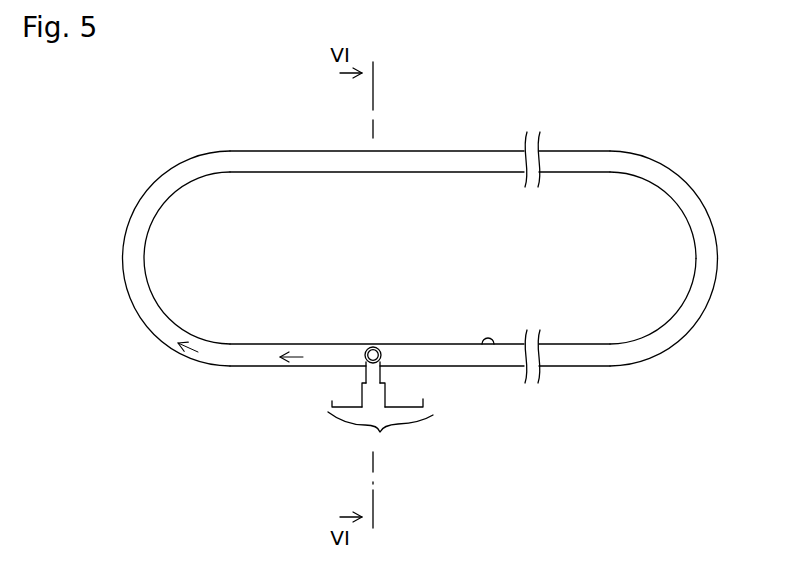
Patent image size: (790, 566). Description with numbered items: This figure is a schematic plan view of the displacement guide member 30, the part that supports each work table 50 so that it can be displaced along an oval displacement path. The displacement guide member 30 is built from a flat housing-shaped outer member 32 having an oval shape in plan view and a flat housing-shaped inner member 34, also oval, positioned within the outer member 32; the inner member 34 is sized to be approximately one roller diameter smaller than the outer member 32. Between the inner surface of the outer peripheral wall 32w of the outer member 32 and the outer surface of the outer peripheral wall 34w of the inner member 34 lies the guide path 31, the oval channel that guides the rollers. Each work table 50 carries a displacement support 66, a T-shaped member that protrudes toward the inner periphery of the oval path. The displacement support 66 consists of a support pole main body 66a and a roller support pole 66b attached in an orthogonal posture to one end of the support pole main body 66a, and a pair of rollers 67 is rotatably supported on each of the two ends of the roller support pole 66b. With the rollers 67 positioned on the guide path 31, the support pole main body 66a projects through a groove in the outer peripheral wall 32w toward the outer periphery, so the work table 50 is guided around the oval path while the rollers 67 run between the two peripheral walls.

The displacement guide member 30 is at (470, 147).
The guide path 31 is at (494, 346).
The outer member 32 is at (629, 368).
The outer peripheral wall 32w is at (672, 346).
The inner member 34 is at (585, 171).
The outer peripheral wall 34w is at (651, 178).
The work table 50 is at (402, 398).
The displacement support 66 is at (364, 378).
The support pole main body 66a is at (384, 366).
The roller support pole 66b is at (378, 348).
The roller 67 is at (368, 349).